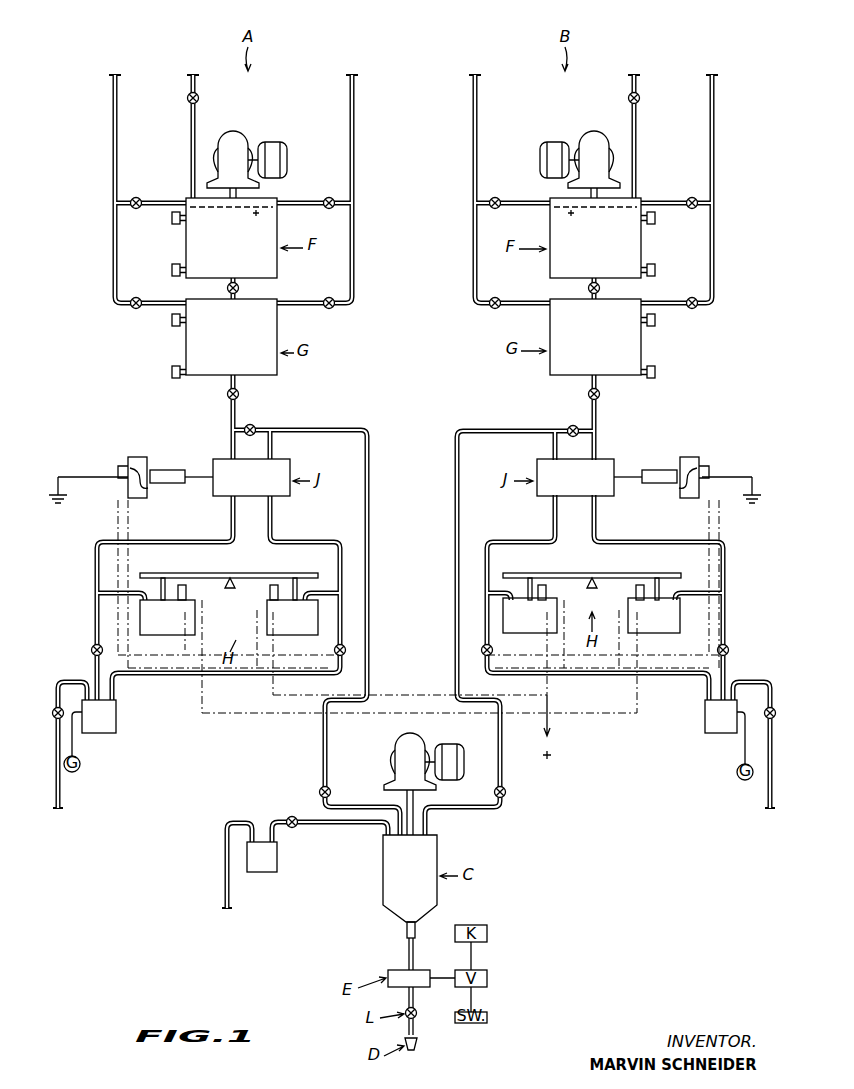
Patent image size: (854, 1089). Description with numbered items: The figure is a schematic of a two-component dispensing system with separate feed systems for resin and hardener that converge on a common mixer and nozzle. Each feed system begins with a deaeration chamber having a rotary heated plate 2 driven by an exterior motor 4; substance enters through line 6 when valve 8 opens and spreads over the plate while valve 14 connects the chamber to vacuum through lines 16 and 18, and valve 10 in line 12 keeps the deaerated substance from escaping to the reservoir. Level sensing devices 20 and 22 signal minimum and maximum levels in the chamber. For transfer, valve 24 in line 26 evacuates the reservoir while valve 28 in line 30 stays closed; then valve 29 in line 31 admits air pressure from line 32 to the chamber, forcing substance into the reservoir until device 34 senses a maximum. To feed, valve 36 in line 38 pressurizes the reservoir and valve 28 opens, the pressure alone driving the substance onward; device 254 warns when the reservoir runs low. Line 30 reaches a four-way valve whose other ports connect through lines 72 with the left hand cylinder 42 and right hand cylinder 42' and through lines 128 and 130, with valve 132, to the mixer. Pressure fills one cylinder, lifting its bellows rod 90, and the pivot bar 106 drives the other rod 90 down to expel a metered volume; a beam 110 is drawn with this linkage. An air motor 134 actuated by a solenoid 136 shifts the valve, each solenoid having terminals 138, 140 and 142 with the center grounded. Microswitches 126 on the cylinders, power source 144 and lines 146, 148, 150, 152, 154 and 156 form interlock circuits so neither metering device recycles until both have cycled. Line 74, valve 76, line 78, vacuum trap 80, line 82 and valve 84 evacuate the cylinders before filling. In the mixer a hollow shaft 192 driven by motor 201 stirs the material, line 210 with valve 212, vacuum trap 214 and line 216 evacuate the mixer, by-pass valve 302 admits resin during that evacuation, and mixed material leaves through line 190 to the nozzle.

The rotary heated plate 2 is at (258, 214).
The motor 4 is at (234, 132).
The line 6 is at (190, 128).
The valve 8 is at (189, 94).
The valve 10 is at (227, 292).
The line 12 is at (239, 293).
The valve 14 is at (329, 197).
The line 16 is at (305, 205).
The line 18 is at (354, 108).
The level sensing device 20 is at (172, 272).
The level sensing device 22 is at (171, 221).
The valve 24 is at (329, 310).
The line 26 is at (296, 301).
The valve 28 is at (239, 395).
The valve 29 is at (136, 197).
The line 30 is at (229, 414).
The line 31 is at (163, 201).
The line 32 is at (113, 101).
The level sensing device 34 is at (172, 322).
The valve 36 is at (133, 309).
The line 38 is at (174, 302).
The left hand cylinder 42 is at (410, 616).
The right hand cylinder 42' is at (412, 616).
The line 72 is at (229, 514).
The line 74 is at (96, 605).
The valve 76 is at (93, 647).
The line 78 is at (94, 663).
The vacuum trap 80 is at (91, 726).
The line 82 is at (60, 678).
The valve 84 is at (52, 716).
The bellows rod 90 is at (165, 577).
The pivot bar 106 is at (242, 580).
The balance beam 110 is at (231, 573).
The microswitch 126 is at (270, 590).
The line 128 is at (274, 450).
The line 130 is at (370, 506).
The valve 132 is at (329, 789).
The air motor 134 is at (166, 470).
The solenoid 136 is at (128, 463).
The terminal 138 is at (137, 457).
The terminal 140 is at (145, 490).
The terminal 142 is at (134, 503).
The source of D. C. power 144 is at (553, 735).
The line 146 is at (249, 648).
The line 148 is at (398, 695).
The line 150 is at (548, 694).
The line 152 is at (162, 631).
The line 154 is at (240, 714).
The line 156 is at (622, 713).
The line 190 is at (406, 955).
The hollow shaft 192 is at (414, 806).
The driving motor 201 is at (410, 740).
The line 210 is at (352, 823).
The valve 212 is at (293, 816).
The vacuum trap 214 is at (265, 872).
The line 216 is at (226, 820).
The sensing device 254 is at (174, 374).
The by-pass valve 302 is at (256, 427).